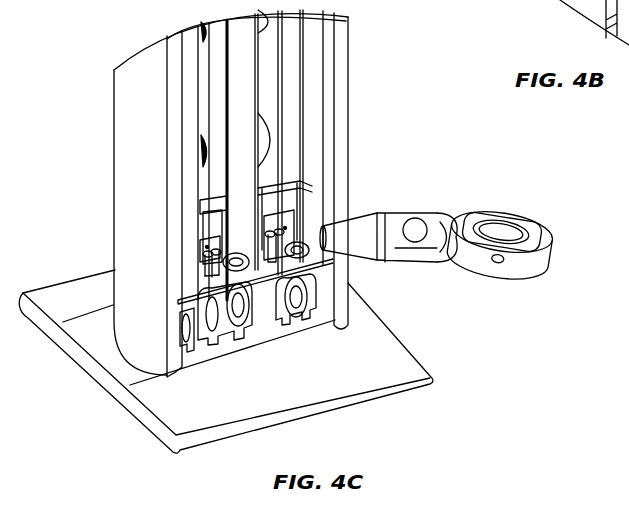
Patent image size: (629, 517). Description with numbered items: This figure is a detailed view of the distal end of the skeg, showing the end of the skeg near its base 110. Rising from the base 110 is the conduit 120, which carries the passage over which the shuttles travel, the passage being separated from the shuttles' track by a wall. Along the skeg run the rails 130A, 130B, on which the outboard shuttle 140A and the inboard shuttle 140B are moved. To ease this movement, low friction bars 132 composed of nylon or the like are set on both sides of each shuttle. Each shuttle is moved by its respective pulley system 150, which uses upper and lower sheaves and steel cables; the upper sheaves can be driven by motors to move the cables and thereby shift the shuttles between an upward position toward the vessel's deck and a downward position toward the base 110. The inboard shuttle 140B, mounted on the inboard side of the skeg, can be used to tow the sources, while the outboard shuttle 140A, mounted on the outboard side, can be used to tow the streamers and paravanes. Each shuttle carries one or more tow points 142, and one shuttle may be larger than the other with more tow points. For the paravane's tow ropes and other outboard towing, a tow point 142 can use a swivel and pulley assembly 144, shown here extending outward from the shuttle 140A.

The base 110 is at (131, 428).
The conduit 120 is at (113, 149).
The rail 130A is at (288, 90).
The rail 130B is at (208, 100).
The low friction bar 132 is at (272, 50).
The outboard shuttle 140A is at (293, 188).
The inboard shuttle 140B is at (207, 208).
The tow point 142 is at (205, 272).
The swivel and pulley assembly 144 is at (538, 210).
The pulley system 150 is at (293, 316).